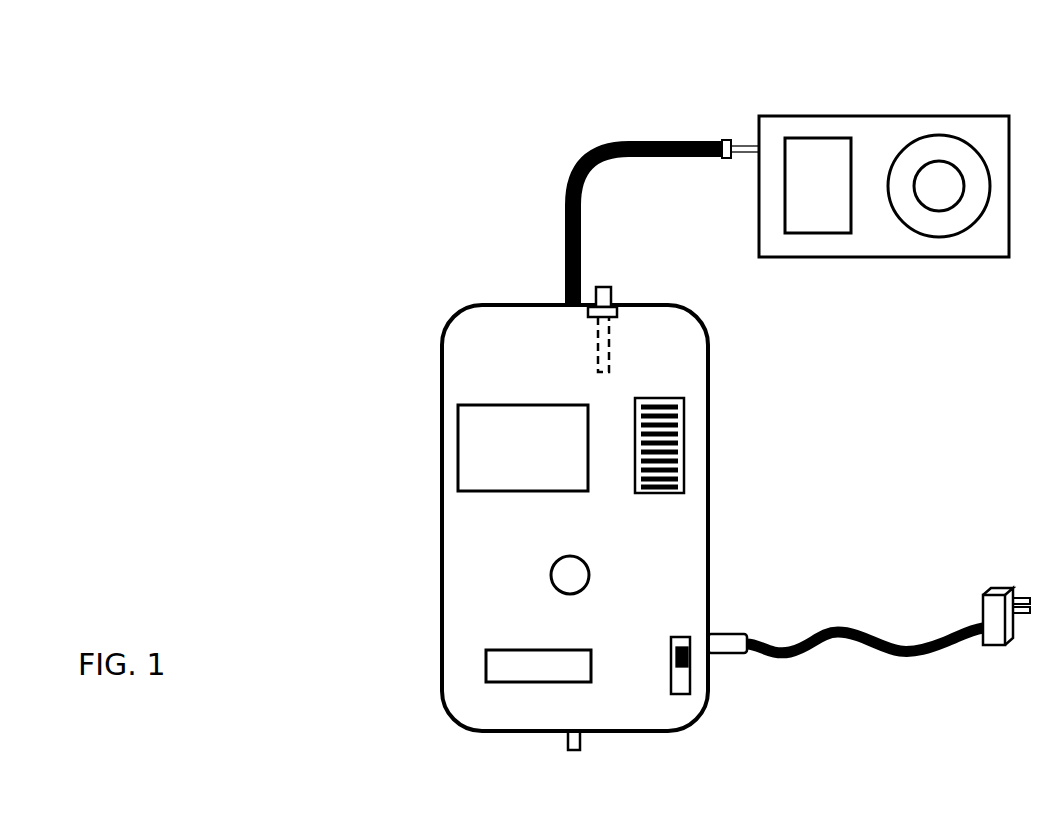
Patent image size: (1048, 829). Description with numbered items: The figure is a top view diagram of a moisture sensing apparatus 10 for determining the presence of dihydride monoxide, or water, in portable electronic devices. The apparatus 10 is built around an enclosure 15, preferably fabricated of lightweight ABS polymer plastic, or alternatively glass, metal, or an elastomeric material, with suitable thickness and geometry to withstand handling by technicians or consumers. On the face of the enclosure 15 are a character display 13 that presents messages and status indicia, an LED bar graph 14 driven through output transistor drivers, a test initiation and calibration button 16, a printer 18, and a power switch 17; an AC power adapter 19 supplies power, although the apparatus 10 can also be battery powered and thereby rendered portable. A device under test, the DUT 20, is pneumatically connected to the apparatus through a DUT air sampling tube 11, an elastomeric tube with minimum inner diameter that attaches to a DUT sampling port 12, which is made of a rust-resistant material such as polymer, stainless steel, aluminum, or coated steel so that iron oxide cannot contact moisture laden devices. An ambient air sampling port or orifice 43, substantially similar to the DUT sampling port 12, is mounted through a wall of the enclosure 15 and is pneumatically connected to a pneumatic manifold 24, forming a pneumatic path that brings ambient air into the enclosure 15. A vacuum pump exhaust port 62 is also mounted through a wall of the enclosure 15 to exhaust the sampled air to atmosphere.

The moisture sensing apparatus 10 is at (550, 494).
The DUT air sampling tube 11 is at (615, 188).
The DUT sampling port 12 is at (742, 135).
The display 13 is at (472, 445).
The LED bar graph 14 is at (687, 450).
The enclosure 15 is at (478, 556).
The test initiation and calibration button 16 is at (538, 592).
The power switch 17 is at (700, 665).
The printer 18 is at (515, 690).
The AC power adapter 19 is at (925, 638).
The DUT 20 is at (863, 116).
The pneumatic manifold 24 is at (615, 345).
The ambient air sampling port or orifice 43 is at (615, 291).
The vacuum pump exhaust port 62 is at (582, 744).